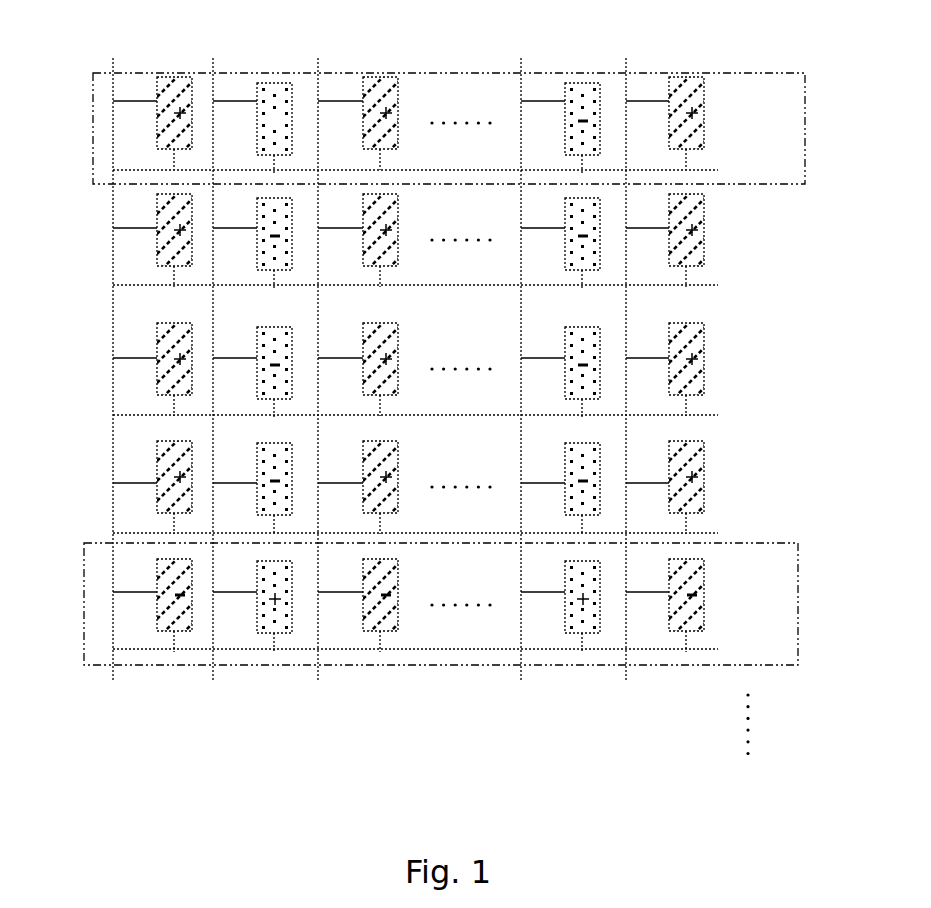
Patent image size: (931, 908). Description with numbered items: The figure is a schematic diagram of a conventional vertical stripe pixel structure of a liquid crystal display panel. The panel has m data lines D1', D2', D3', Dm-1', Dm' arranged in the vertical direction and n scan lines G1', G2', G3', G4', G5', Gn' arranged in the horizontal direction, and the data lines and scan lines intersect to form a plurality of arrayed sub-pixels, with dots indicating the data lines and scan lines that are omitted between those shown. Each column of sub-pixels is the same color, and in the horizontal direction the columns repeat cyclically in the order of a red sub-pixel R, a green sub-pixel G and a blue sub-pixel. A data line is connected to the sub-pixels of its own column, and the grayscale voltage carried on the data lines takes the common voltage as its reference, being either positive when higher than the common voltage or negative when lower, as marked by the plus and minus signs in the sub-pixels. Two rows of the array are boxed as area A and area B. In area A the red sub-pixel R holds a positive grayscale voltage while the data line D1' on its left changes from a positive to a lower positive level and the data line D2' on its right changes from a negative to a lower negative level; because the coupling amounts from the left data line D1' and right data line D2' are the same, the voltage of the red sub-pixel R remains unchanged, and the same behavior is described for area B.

The area A is at (415, 128).
The area B is at (84, 602).
The red sub-pixel R is at (152, 123).
The green sub-pixel G is at (252, 128).
The data line D1' is at (135, 348).
The data line D2' is at (240, 348).
The data line D3' is at (332, 348).
The data line Dm-1' is at (548, 348).
The data line Dm' is at (649, 348).
The scan line G1' is at (450, 164).
The scan line G2' is at (450, 279).
The scan line G3' is at (450, 416).
The scan line G4' is at (450, 516).
The scan line G5' is at (450, 639).
The scan line Gn' is at (760, 749).